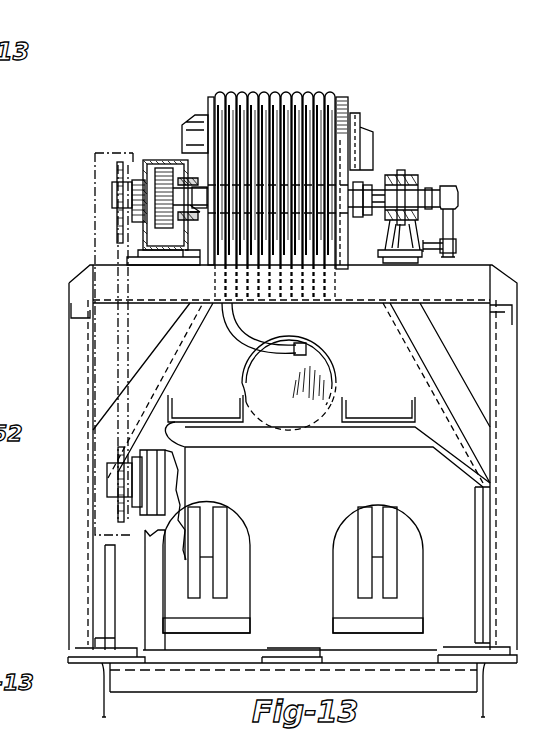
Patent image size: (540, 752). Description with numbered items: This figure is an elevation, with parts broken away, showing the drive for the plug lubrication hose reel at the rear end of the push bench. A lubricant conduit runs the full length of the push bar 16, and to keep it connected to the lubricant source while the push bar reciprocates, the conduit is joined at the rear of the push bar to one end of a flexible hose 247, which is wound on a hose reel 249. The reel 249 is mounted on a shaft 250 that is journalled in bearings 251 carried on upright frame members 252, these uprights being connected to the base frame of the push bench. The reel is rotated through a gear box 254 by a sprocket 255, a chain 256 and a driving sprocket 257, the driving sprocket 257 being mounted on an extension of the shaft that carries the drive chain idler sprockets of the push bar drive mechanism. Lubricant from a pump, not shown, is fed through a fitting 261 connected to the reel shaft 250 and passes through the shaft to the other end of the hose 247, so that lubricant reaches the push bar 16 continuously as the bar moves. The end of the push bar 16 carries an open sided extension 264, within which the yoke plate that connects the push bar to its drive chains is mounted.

The push bar 16 is at (305, 343).
The flexible hose 247 is at (247, 97).
The hose reel 249 is at (350, 97).
The shaft 250 is at (372, 140).
The bearings 251 is at (196, 158).
The upright frame members 252 is at (512, 330).
The gear box 254 is at (162, 160).
The sprocket 255 is at (118, 176).
The chain 256 is at (94, 247).
The driving sprocket 257 is at (118, 511).
The fitting 261 is at (460, 189).
The open sided extension 264 is at (326, 380).